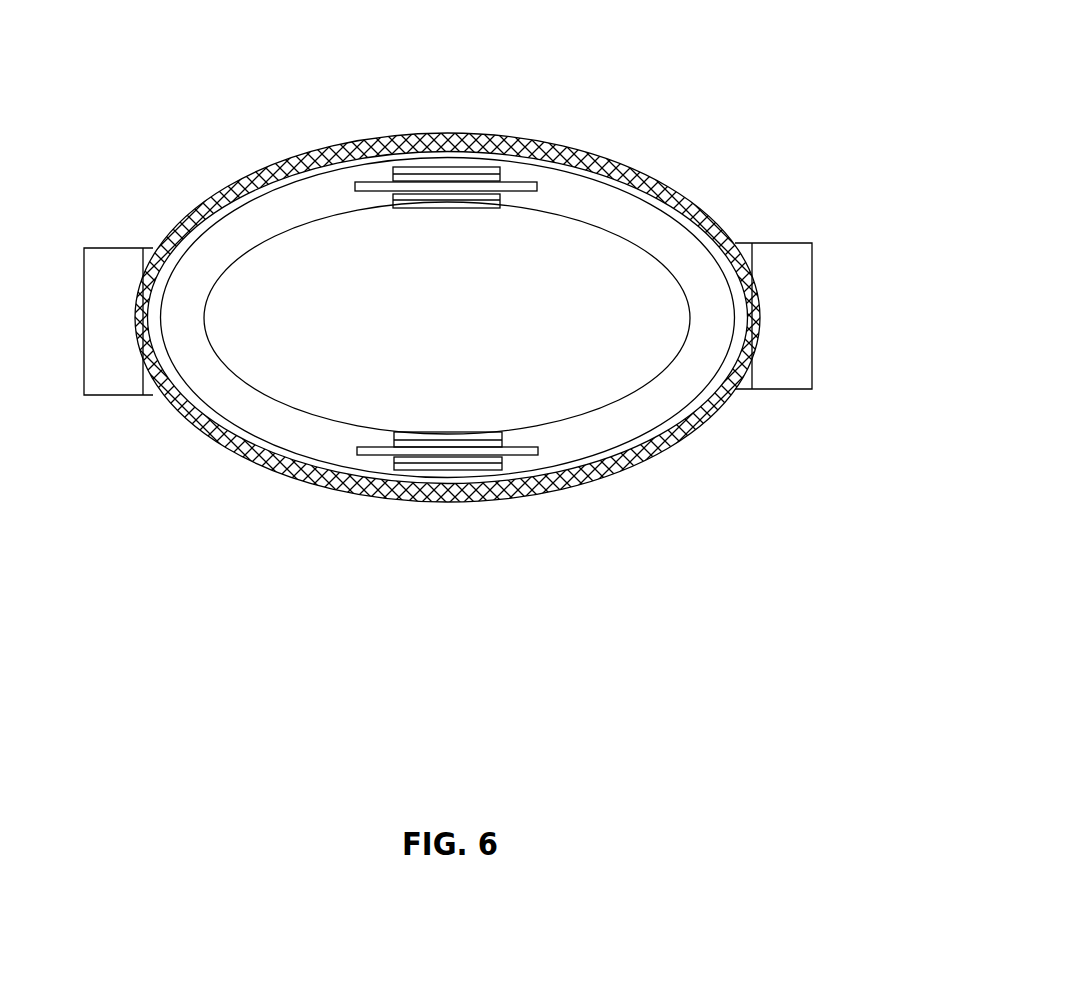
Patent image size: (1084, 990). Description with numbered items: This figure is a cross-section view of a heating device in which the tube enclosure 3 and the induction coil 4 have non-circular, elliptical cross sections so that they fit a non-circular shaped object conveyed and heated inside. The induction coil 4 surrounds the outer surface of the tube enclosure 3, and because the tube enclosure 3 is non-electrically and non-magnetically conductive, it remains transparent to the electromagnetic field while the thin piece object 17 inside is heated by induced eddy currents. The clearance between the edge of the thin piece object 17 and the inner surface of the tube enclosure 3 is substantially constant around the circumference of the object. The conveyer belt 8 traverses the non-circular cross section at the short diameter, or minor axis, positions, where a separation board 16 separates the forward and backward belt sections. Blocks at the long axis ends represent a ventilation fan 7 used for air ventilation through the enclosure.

The tube enclosure 3 is at (288, 160).
The induction coil 4 is at (587, 155).
The ventilation fan 7 is at (780, 275).
The conveyer belt 8 is at (397, 483).
The separation board 16 is at (530, 455).
The thin piece object 17 is at (340, 348).